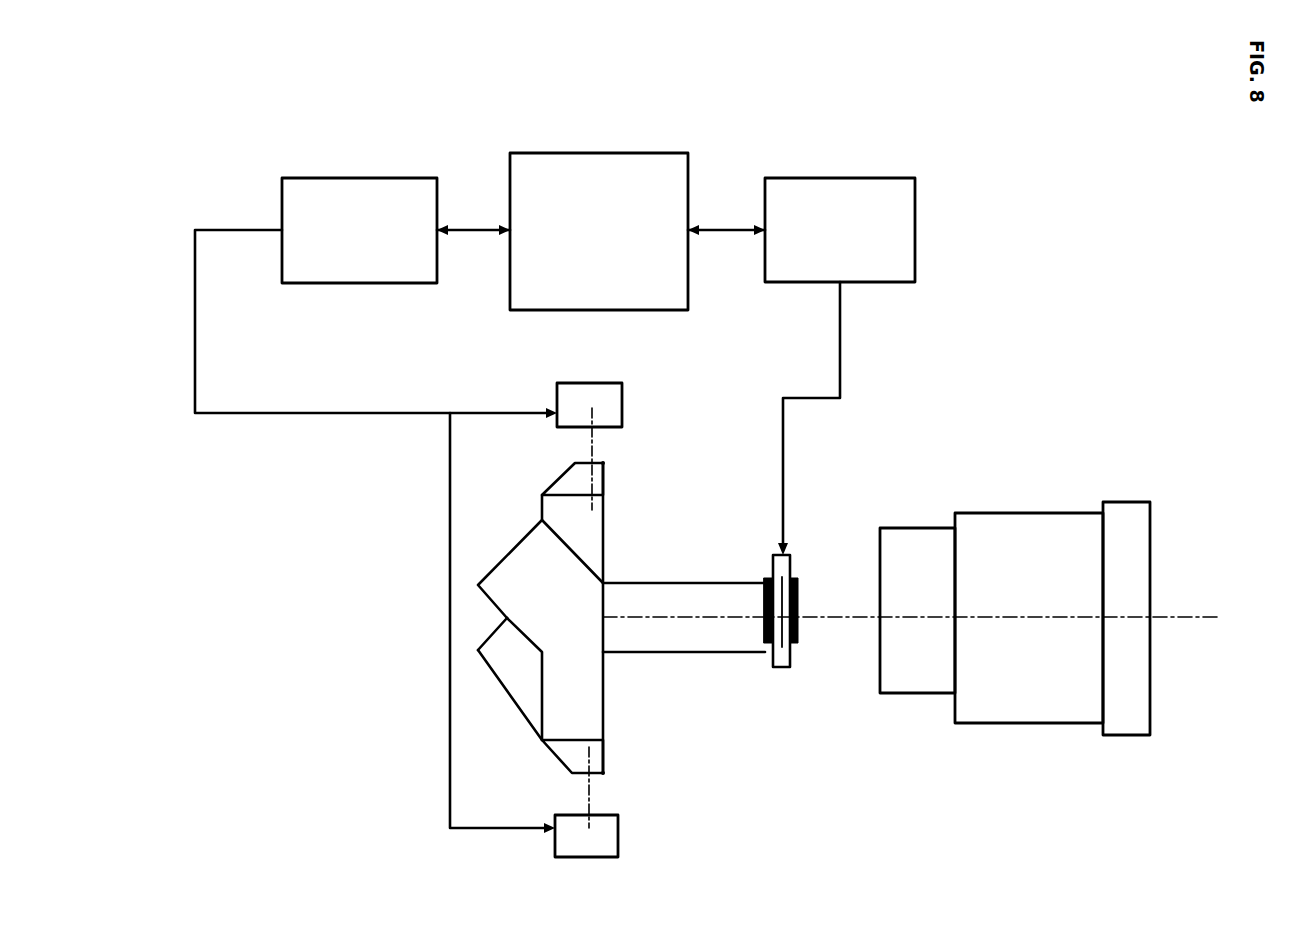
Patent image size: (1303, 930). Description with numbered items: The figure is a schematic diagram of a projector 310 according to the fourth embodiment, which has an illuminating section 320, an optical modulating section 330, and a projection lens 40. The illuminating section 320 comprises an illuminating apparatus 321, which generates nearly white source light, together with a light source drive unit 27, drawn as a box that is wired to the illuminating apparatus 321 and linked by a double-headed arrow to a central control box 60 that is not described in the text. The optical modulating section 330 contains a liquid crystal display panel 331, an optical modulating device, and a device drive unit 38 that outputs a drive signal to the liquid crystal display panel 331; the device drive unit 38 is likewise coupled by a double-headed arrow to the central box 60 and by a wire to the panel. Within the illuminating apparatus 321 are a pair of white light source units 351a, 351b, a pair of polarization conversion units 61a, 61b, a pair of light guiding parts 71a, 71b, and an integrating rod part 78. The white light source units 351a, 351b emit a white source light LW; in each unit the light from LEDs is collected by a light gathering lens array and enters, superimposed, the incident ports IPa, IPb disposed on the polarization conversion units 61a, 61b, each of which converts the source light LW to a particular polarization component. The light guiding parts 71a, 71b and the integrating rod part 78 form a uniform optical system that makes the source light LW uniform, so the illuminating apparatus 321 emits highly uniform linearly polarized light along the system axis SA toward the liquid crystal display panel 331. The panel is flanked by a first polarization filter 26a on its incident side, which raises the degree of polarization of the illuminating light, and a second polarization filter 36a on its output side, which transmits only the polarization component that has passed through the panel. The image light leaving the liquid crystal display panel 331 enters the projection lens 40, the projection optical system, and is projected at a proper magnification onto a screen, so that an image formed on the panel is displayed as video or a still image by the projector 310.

The projector 310 is at (1176, 74).
The light source drive unit 27 is at (374, 241).
The controller 60 is at (612, 241).
The device drive unit 38 is at (854, 241).
The white light source unit 351a is at (558, 845).
The white light source unit 351b is at (557, 397).
The source light LW is at (590, 445).
The incident port IPa is at (603, 773).
The incident port IPb is at (603, 463).
The polarization conversion unit 61a is at (603, 752).
The polarization conversion unit 61b is at (603, 482).
The light guiding part 71a is at (555, 725).
The light guiding part 71b is at (558, 512).
The illuminating apparatus 321 is at (476, 617).
The illuminating section 320 is at (418, 677).
The integrating rod part 78 is at (684, 598).
The system optical axis SA is at (650, 620).
The first polarization filter 26a is at (768, 620).
The optical modulating section 330 is at (779, 690).
The liquid crystal display panel 331 is at (788, 565).
The second polarization filter 36a is at (790, 645).
The projection lens 40 is at (1037, 513).